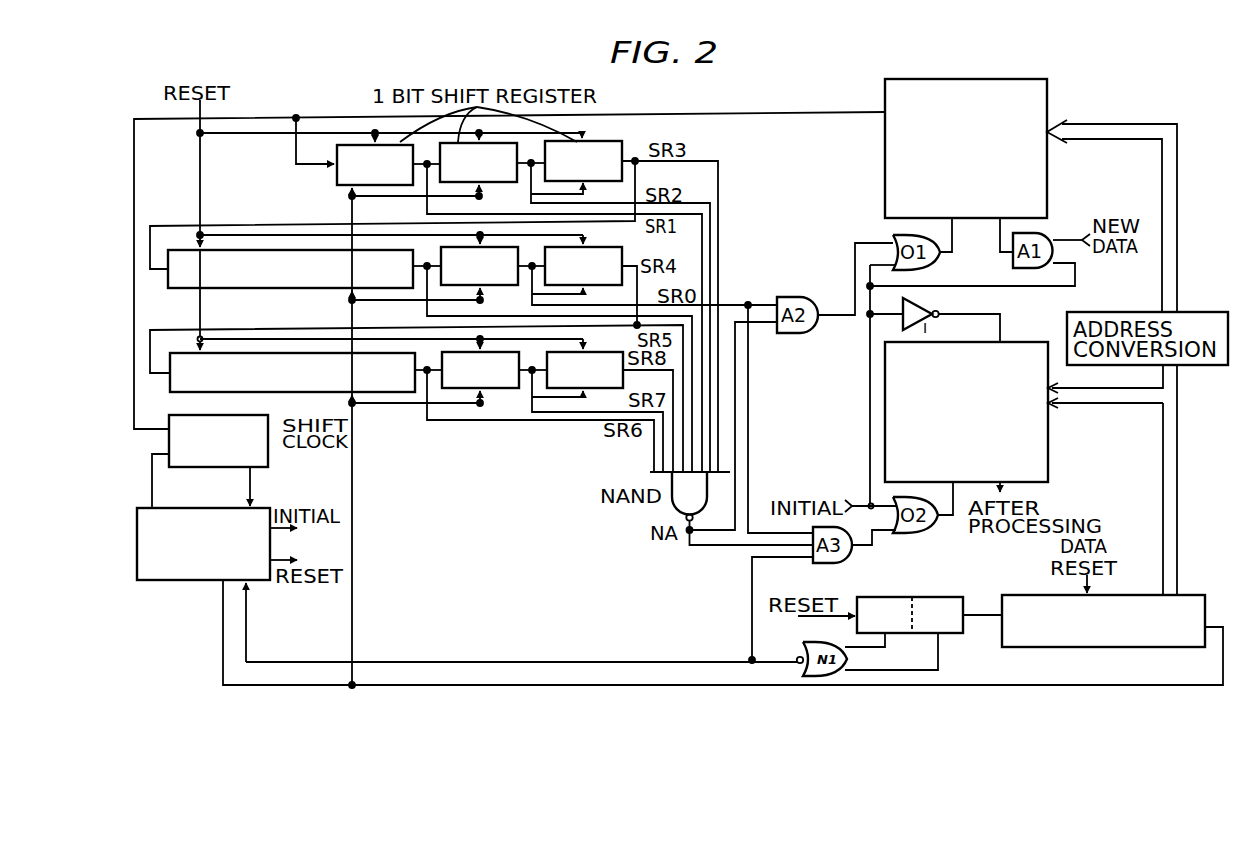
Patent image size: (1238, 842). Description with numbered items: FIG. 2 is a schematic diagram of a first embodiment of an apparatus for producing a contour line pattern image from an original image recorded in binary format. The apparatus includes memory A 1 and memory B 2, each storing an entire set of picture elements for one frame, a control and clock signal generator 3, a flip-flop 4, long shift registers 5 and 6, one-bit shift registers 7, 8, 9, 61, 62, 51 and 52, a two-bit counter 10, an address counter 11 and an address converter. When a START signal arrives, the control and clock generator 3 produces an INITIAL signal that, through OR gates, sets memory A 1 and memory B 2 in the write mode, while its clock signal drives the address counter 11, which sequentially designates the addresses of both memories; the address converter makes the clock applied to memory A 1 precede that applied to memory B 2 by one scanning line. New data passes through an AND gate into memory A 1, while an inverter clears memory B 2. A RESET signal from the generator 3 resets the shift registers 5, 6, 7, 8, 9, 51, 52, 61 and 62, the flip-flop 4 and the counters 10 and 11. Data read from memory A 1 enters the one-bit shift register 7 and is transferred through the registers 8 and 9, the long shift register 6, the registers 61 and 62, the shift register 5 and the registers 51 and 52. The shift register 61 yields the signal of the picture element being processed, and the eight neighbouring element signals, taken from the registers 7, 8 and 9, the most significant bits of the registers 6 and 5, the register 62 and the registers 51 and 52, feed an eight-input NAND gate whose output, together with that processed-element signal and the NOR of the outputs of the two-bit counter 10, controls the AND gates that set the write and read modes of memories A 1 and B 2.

The memory A 1 is at (1047, 180).
The memory B 2 is at (1048, 440).
The control and clock signal generator 3 is at (203, 581).
The flip-flop 4 is at (268, 457).
The 2046-bit shift register 5 is at (178, 393).
The 2046-bit shift register 6 is at (192, 289).
The 1-bit shift register 7 is at (340, 186).
The 1-bit shift register 8 is at (445, 183).
The 1-bit shift register 9 is at (598, 142).
The 1-bit shift register 61 is at (450, 285).
The 1-bit shift register 62 is at (600, 247).
The 1-bit shift register 51 is at (458, 390).
The 1-bit shift register 52 is at (562, 388).
The 2-bit counter 10 is at (960, 634).
The address counter 11 is at (1120, 648).